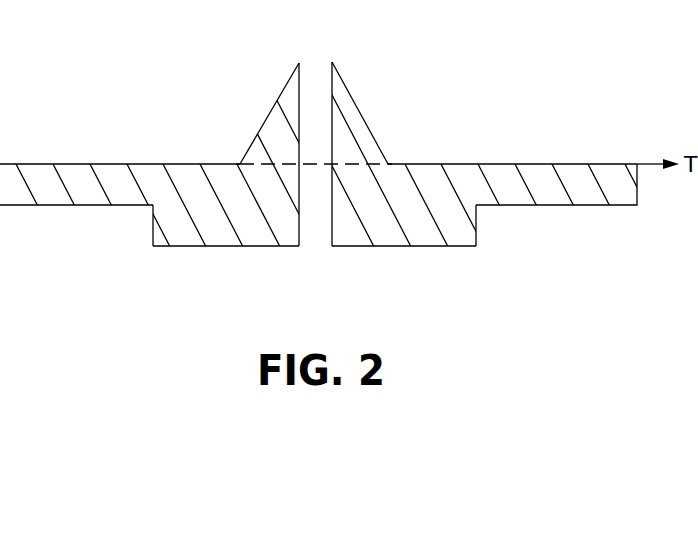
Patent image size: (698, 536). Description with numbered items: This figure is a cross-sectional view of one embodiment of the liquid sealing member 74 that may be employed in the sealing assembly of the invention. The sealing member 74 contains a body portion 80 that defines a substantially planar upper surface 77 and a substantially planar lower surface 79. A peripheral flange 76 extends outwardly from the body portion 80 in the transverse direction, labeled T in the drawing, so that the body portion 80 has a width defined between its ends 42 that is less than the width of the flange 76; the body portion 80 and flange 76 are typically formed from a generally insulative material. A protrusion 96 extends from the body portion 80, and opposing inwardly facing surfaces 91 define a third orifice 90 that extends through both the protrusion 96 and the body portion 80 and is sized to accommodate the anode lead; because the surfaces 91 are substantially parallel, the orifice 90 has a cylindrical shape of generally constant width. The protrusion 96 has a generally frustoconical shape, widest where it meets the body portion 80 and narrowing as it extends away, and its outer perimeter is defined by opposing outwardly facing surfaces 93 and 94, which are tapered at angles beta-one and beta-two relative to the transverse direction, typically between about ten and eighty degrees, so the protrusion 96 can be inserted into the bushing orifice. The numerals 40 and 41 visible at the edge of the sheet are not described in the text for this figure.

The sealing member 74 is at (527, 31).
The peripheral flange 76 is at (22, 177).
The upper surface 77 is at (472, 162).
The ends 42 is at (153, 225).
The body portion 80 is at (223, 232).
The lower surface 79 is at (420, 247).
The outwardly facing surface 93 is at (280, 93).
The outwardly facing surface 94 is at (350, 93).
The inwardly facing surfaces 91 is at (300, 247).
The third orifice 90 is at (313, 226).
The protrusion 96 is at (245, 158).
The body 40 is at (0, 483).
The bore 41 is at (35, 533).